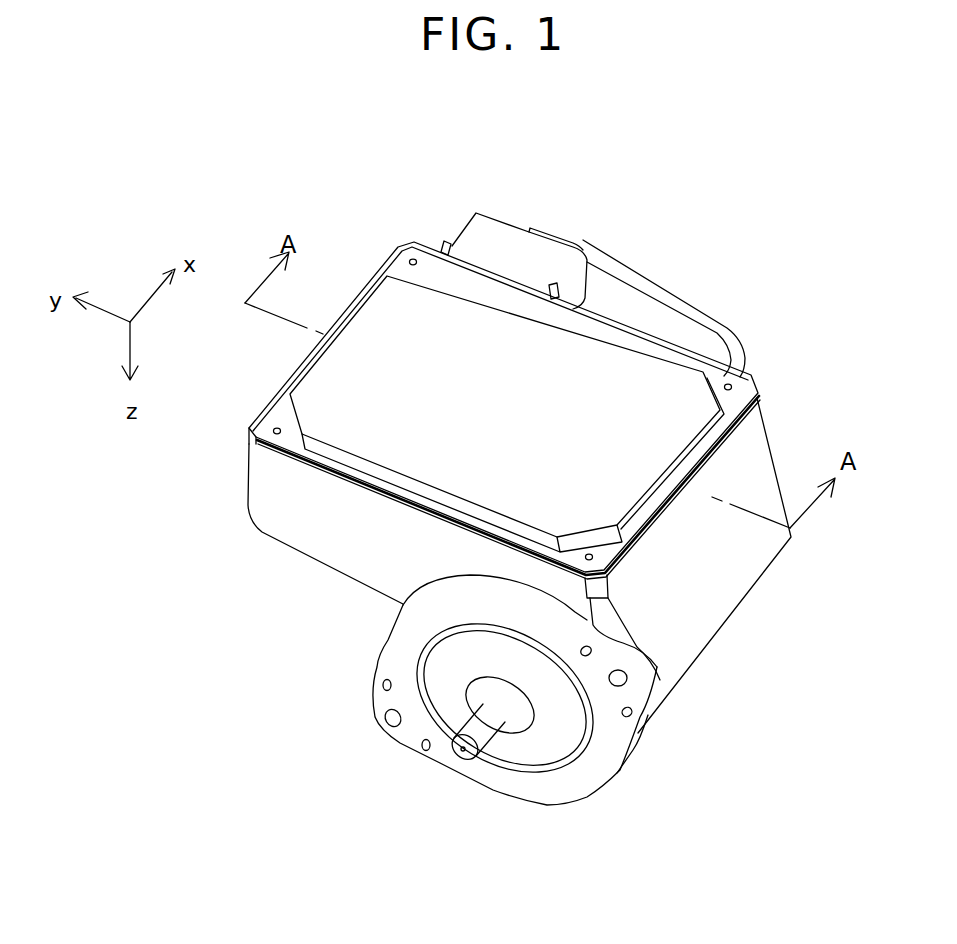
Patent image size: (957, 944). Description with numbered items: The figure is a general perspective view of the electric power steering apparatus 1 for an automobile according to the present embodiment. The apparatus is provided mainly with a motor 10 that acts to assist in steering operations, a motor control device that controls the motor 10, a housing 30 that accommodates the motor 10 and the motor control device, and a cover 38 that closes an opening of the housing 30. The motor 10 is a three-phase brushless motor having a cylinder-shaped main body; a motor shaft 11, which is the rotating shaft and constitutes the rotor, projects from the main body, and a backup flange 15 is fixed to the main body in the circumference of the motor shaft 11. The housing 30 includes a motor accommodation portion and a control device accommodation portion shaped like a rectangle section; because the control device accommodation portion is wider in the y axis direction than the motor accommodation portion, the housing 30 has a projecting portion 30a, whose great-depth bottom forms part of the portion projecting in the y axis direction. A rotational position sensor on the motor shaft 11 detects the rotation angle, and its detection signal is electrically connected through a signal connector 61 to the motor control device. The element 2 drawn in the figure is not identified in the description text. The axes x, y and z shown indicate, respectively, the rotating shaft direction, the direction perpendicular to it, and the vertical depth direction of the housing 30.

The electric power steering apparatus 1 is at (246, 219).
The control device 2 is at (242, 483).
The motor 10 is at (751, 642).
The motor shaft 11 is at (460, 748).
The backup flange 15 is at (380, 703).
The housing 30 is at (388, 573).
The projecting portion 30a is at (337, 528).
The cover 38 is at (457, 367).
The signal connector 61 is at (508, 240).